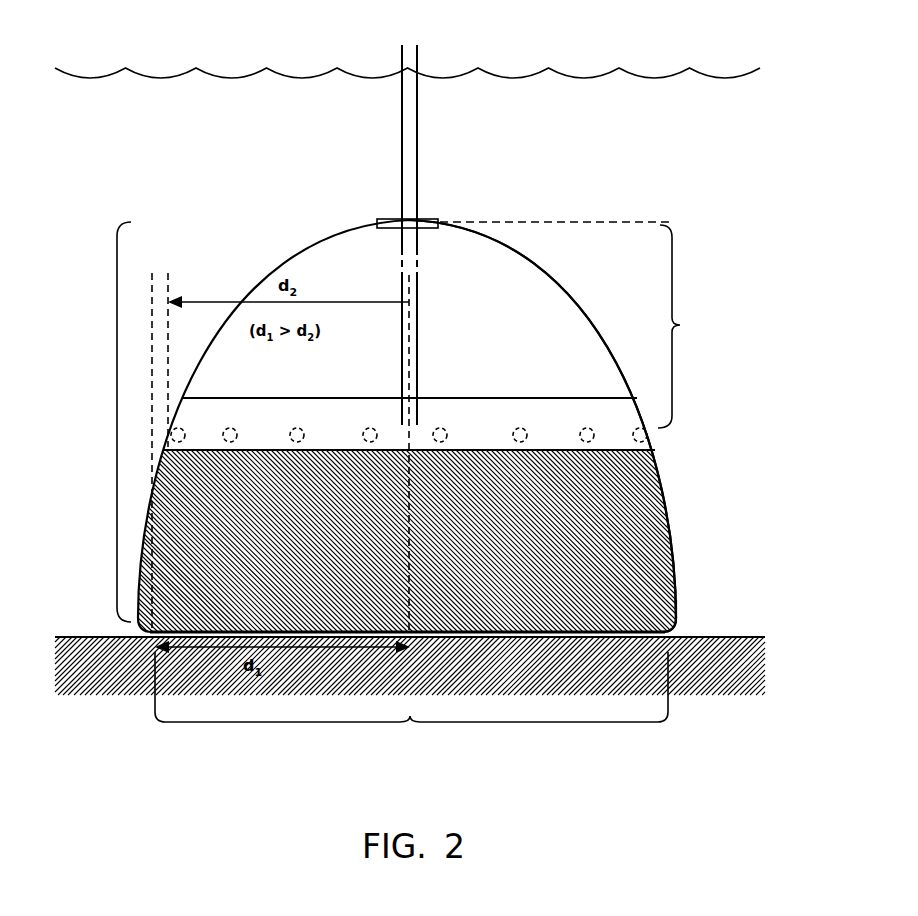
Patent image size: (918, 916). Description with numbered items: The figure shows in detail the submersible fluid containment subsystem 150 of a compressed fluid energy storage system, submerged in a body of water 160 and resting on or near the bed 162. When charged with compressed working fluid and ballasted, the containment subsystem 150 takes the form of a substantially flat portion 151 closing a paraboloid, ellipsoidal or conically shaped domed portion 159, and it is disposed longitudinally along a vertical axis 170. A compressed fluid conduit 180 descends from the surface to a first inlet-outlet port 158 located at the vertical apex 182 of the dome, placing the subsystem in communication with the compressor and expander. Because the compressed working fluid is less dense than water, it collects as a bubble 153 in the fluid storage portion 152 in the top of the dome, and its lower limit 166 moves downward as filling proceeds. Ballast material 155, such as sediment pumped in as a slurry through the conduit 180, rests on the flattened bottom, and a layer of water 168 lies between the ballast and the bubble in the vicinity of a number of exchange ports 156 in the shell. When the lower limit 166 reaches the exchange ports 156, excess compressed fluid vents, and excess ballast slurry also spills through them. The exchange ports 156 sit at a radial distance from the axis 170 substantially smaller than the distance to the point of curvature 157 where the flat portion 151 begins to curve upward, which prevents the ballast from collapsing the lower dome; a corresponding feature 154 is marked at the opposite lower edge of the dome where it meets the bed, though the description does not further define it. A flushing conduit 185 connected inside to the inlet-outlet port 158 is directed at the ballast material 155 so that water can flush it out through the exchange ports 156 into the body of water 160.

The submersible fluid containment subsystem 150 is at (485, 302).
The flat portion 151 is at (411, 705).
The fluid storage portion 152 is at (580, 325).
The bubble of compressed working fluid 153 is at (523, 253).
The dome base edge 154 is at (675, 633).
The ballast material 155 is at (640, 575).
The exchange port 156 is at (523, 433).
The point of curvature 157 is at (150, 637).
The first inlet-outlet port 158 is at (418, 214).
The domed portion 159 is at (95, 422).
The body of water 160 is at (270, 70).
The bed of body of water 162 is at (713, 632).
The lower limit of the bubble 166 is at (455, 398).
The layer of water 168 is at (615, 432).
The vertical axis 170 is at (410, 632).
The compressed fluid conduit 180 is at (420, 67).
The vertical apex 182 is at (367, 223).
The flushing conduit 185 is at (402, 353).